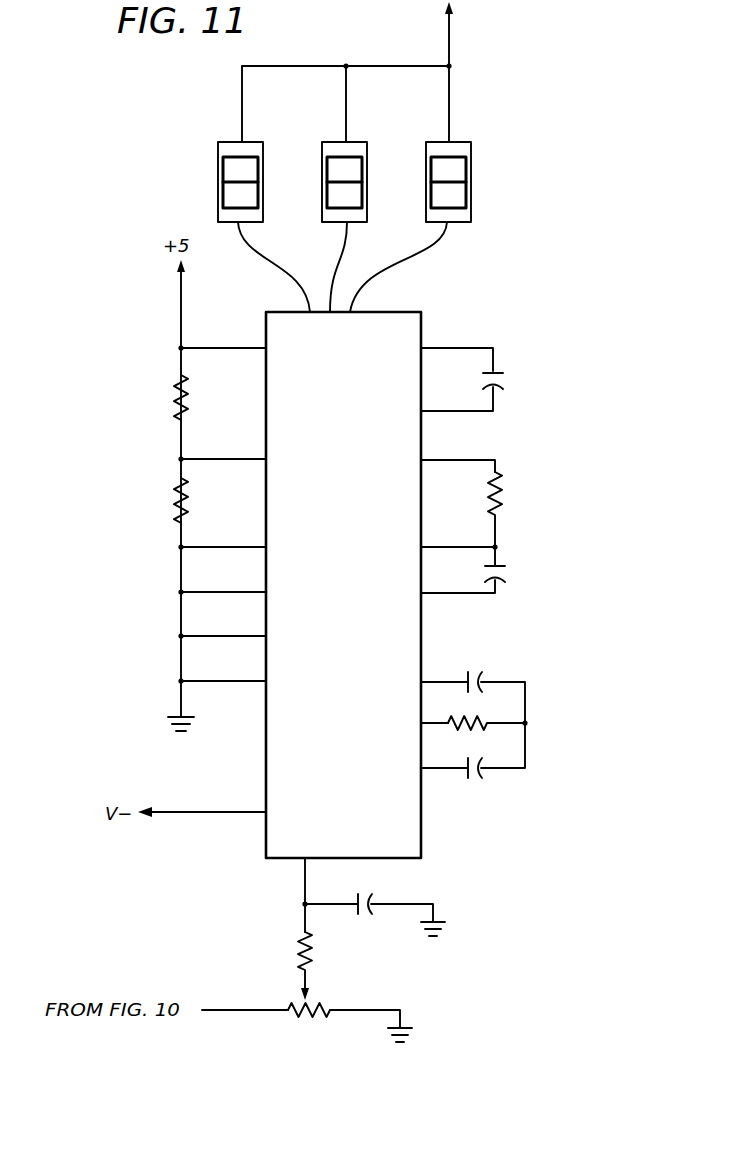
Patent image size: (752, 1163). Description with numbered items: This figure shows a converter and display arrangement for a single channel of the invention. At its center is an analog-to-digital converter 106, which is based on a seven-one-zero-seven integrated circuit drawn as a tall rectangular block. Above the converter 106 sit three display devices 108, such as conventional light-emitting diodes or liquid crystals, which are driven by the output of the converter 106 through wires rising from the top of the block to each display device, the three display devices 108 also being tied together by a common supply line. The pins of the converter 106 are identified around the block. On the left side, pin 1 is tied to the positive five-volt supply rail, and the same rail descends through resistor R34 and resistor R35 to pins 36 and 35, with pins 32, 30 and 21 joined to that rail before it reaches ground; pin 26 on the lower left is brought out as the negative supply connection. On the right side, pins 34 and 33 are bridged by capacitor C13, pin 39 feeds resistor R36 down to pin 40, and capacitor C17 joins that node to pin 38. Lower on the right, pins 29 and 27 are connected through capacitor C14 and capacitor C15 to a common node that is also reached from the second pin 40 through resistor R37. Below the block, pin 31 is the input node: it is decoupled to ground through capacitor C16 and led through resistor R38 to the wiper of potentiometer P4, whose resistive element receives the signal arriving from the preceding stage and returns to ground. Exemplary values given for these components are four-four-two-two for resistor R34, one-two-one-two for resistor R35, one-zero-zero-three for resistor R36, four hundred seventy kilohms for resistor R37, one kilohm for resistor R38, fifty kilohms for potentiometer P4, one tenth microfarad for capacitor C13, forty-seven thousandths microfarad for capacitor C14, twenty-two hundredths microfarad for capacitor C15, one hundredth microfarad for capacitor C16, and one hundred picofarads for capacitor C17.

The analog-to-digital converter 106 is at (367, 749).
The display devices 108 is at (471, 142).
The pin 1 (V+) of chip 106 1 is at (223, 340).
The pin 21 (digital ground) of chip 106 21 is at (223, 673).
The pin 26 (V-) of chip 106 26 is at (202, 806).
The pin 27 of chip 106 27 is at (444, 760).
The pin 29 of chip 106 29 is at (444, 674).
The pin 30 of chip 106 30 is at (223, 628).
The pin 31 (input) of chip 106 31 is at (295, 895).
The pin 32 of chip 106 32 is at (223, 584).
The pin 33 of chip 106 33 is at (457, 399).
The pin 34 of chip 106 34 is at (457, 351).
The pin 35 of chip 106 35 is at (223, 539).
The pin 36 of chip 106 36 is at (223, 451).
The pin 38 of chip 106 38 is at (458, 585).
The pin 39 of chip 106 39 is at (458, 457).
The pin 40 of chip 106 40 is at (459, 627).
The resistor R34 is at (199, 402).
The resistor R35 is at (199, 500).
The resistor R36 is at (514, 518).
The resistor R37 is at (488, 736).
The resistor R38 is at (324, 966).
The capacitor C13 is at (512, 386).
The capacitor C14 is at (496, 687).
The capacitor C15 is at (496, 761).
The capacitor C16 is at (375, 917).
The capacitor C17 is at (514, 576).
The potentiometer P4 is at (307, 1025).